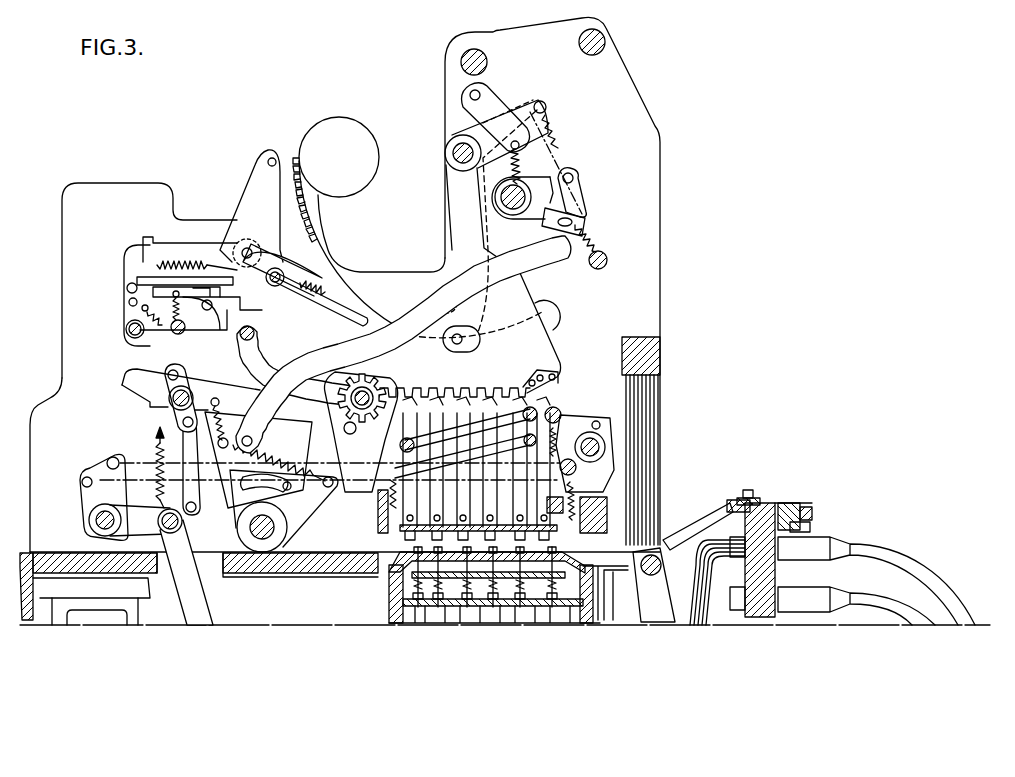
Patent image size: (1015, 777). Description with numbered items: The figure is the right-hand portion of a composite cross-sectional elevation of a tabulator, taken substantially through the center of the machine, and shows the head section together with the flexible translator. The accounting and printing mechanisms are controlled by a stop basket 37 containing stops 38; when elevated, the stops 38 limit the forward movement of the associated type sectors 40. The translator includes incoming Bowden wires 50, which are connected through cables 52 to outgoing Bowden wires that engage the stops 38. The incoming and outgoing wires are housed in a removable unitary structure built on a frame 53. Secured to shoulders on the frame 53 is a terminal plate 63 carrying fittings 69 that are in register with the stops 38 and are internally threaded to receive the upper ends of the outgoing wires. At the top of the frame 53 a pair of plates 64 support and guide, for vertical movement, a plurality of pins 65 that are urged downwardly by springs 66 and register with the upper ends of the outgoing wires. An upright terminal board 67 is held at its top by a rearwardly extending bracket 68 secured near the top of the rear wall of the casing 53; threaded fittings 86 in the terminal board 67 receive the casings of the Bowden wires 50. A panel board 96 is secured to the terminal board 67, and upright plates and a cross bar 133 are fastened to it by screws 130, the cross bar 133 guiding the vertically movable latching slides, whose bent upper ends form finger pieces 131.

The stop basket 37 is at (399, 455).
The stops 38 is at (478, 408).
The type sectors 40 is at (543, 357).
The incoming Bowden wires 50 is at (707, 583).
The cables 52 is at (957, 550).
The frame 53 is at (350, 613).
The terminal plate 63 is at (403, 602).
The plates 64 is at (592, 575).
The pins 65 is at (412, 578).
The springs 66 is at (392, 576).
The terminal board 67 is at (733, 502).
The bracket 68 is at (693, 530).
The fittings 69 is at (585, 604).
The fitting 86 is at (738, 588).
The panel board 96 is at (767, 503).
The screws 130 is at (812, 511).
The finger pieces 131 is at (800, 503).
The cross bar 133 is at (810, 527).